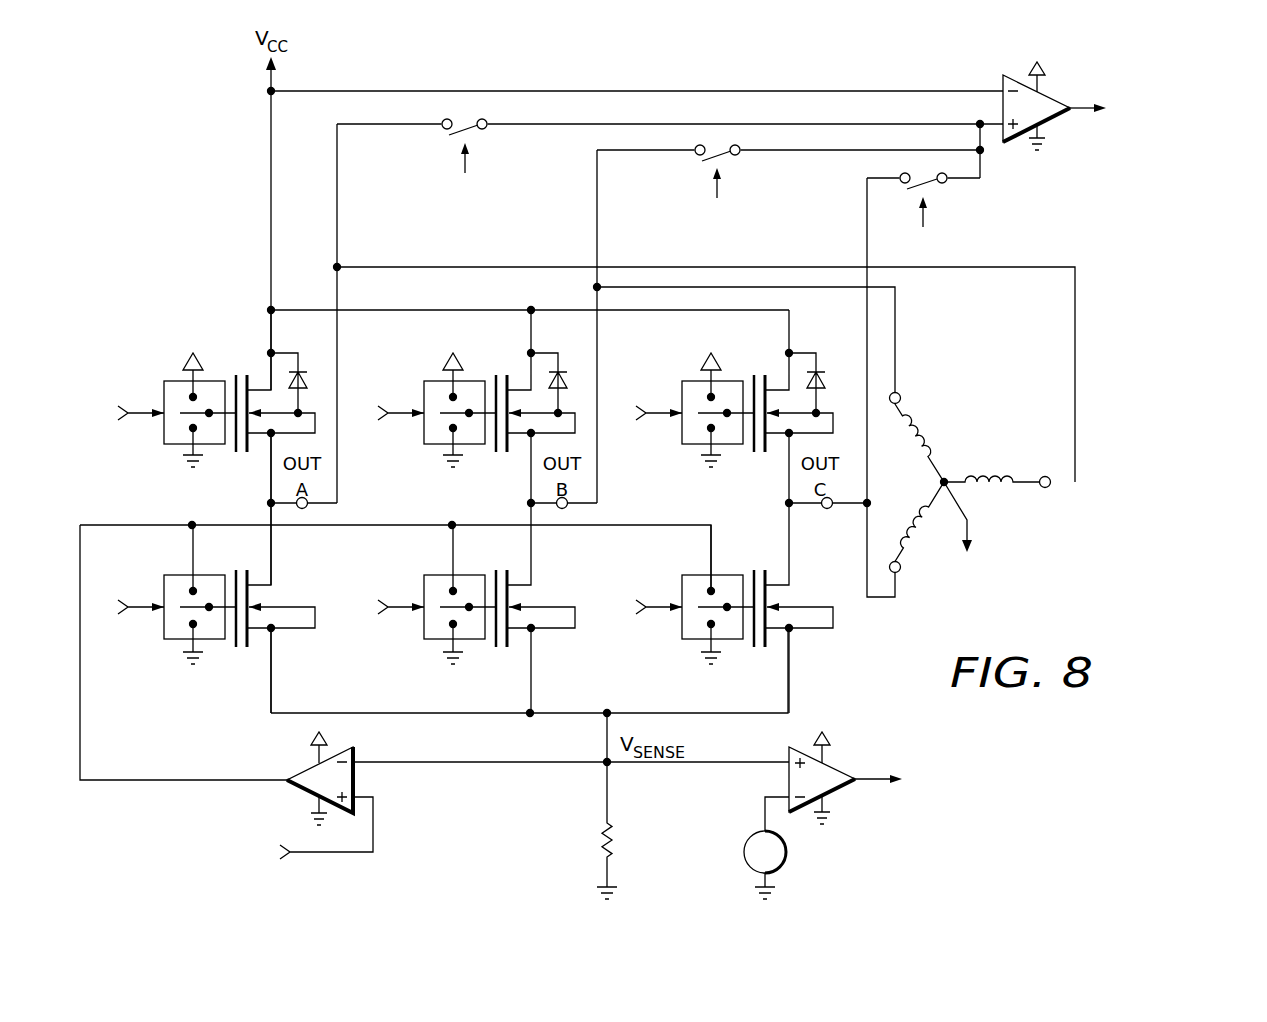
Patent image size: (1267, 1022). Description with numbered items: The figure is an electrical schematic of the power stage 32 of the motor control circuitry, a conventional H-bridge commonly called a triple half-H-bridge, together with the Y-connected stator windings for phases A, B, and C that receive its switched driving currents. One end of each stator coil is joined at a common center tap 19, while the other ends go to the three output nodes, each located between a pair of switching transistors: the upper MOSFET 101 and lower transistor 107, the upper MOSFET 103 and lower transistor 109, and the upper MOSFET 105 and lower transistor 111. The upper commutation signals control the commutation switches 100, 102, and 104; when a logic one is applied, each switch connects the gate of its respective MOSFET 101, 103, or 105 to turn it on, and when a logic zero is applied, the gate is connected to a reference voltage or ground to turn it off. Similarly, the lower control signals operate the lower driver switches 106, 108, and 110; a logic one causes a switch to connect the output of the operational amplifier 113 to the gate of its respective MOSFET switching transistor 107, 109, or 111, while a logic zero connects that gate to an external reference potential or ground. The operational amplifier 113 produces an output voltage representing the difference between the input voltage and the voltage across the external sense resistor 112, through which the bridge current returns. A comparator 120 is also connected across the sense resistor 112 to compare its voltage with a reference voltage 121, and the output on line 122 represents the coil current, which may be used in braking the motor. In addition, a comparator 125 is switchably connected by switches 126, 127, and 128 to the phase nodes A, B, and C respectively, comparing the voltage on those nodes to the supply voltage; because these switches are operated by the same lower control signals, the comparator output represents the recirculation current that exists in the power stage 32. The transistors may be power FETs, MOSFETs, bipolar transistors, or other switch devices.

The common center tap 19 is at (948, 478).
The power stage 32 is at (788, 81).
The commutation switch 100 is at (177, 380).
The MOSFET 101 is at (248, 373).
The commutation switch 102 is at (425, 398).
The MOSFET 103 is at (527, 408).
The commutation switch 104 is at (683, 398).
The MOSFET 105 is at (785, 408).
The lower driver switch 106 is at (177, 642).
The MOSFET switching transistor 107 is at (247, 649).
The lower driver switch 108 is at (427, 610).
The MOSFET switching transistor 109 is at (526, 608).
The lower driver switch 110 is at (686, 610).
The MOSFET switching transistor 111 is at (784, 608).
The external sense resistor 112 is at (601, 838).
The operational amplifier 113 is at (354, 752).
The comparator 120 is at (789, 752).
The reference voltage 121 is at (787, 852).
The output line 122 is at (873, 773).
The comparator 125 is at (1002, 80).
The switch 126 is at (468, 133).
The switch 127 is at (723, 157).
The switch 128 is at (928, 184).